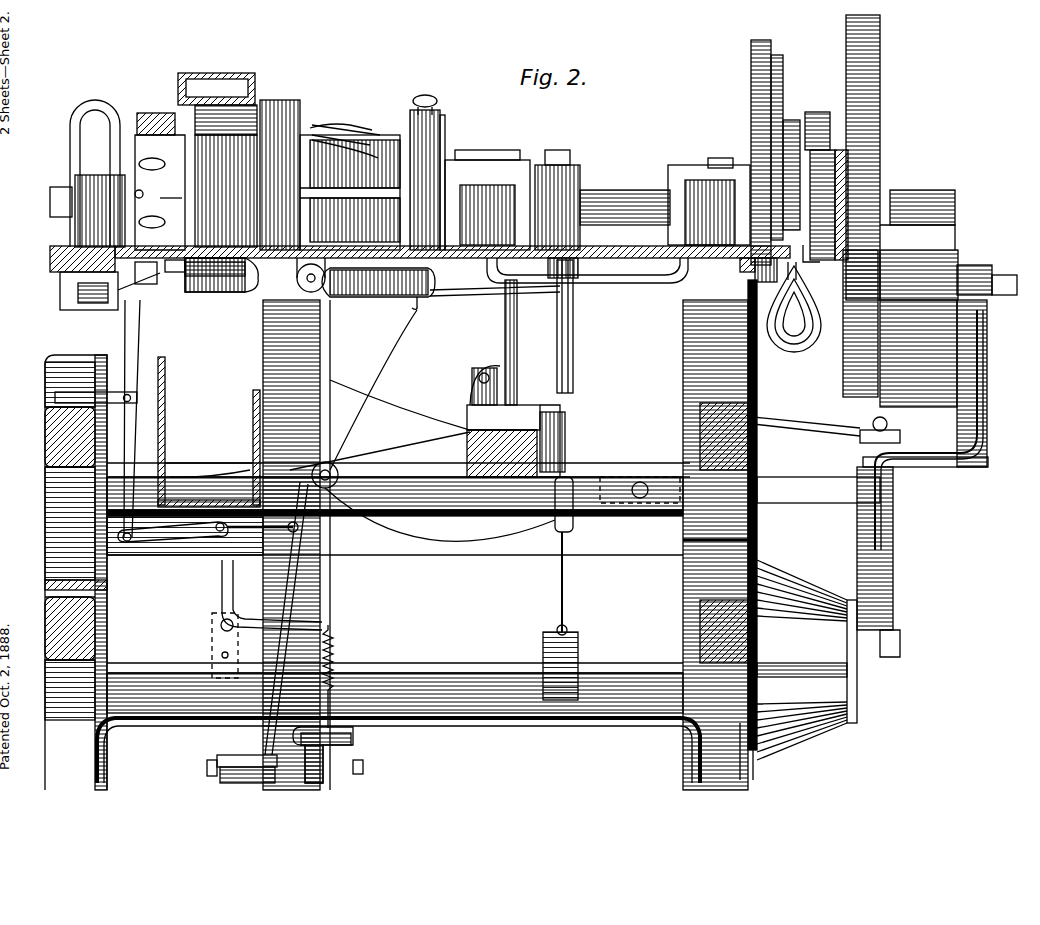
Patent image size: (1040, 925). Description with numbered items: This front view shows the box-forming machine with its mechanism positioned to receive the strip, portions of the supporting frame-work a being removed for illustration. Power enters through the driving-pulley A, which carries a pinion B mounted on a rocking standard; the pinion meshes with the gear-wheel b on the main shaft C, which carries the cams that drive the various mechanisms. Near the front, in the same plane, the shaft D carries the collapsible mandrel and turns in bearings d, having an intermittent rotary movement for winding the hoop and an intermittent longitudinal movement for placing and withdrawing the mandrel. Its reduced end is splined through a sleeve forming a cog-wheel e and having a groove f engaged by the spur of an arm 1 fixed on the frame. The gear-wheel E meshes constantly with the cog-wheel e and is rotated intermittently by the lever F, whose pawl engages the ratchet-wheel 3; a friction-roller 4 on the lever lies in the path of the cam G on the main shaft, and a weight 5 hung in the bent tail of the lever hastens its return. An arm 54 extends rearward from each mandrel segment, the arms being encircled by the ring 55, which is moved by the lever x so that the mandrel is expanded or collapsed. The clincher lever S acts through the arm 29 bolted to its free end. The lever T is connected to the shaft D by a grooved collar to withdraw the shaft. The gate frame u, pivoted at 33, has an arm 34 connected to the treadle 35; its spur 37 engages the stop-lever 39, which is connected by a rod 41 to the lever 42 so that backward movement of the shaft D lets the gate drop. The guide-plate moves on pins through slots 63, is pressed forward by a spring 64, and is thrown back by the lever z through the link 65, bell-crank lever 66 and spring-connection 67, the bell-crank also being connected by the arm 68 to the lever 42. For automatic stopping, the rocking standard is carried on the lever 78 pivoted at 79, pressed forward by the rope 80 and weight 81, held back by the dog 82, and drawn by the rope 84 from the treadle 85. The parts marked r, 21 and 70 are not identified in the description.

The frame-work a is at (48, 262).
The driving-pulley A is at (948, 245).
The pinion B is at (840, 360).
The main shaft C is at (838, 210).
The mandrel shaft D is at (635, 190).
The gear-wheel E is at (750, 85).
The lever F is at (795, 118).
The cam G is at (855, 148).
The lever T is at (580, 160).
The clincher lever S is at (318, 126).
The main gear-wheel b is at (870, 150).
The bearings d is at (470, 165).
The cog-wheel e is at (766, 271).
The groove f is at (787, 266).
The drum r is at (140, 122).
The gate frame u is at (172, 293).
The lever x is at (428, 98).
The lever z is at (134, 330).
The arm 1 is at (798, 255).
The ratchet-wheel 3 is at (783, 88).
The friction-roller 4 is at (828, 114).
The weight 5 is at (783, 345).
The screw 21 is at (167, 204).
The arm 29 is at (344, 130).
The pivot 33 is at (320, 275).
The arm 34 is at (395, 285).
The treadle 35 is at (356, 748).
The spur 37 is at (125, 285).
The stop-lever 39 is at (95, 292).
The rod 41 is at (475, 287).
The lever 42 is at (580, 272).
The arm 54 is at (368, 215).
The ring 55 is at (440, 140).
The slots 63 is at (160, 160).
The spring 64 is at (112, 140).
The link 65 is at (178, 520).
The bell-crank lever 66 is at (222, 585).
The spring-connection 67 is at (337, 656).
The arm 68 is at (574, 360).
The guide bar 70 is at (166, 450).
The lever 78 is at (790, 418).
The pivot 79 is at (730, 425).
The rope 80 is at (564, 592).
The weight 81 is at (578, 650).
The dog 82 is at (518, 322).
The rope 84 is at (402, 428).
The treadle 85 is at (250, 757).